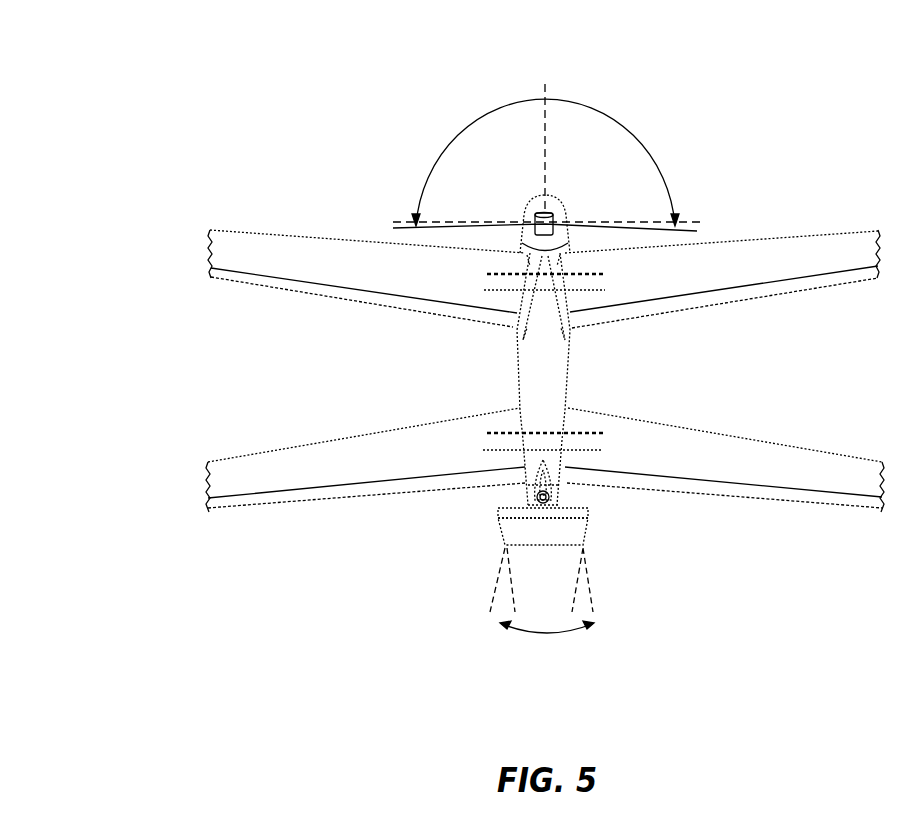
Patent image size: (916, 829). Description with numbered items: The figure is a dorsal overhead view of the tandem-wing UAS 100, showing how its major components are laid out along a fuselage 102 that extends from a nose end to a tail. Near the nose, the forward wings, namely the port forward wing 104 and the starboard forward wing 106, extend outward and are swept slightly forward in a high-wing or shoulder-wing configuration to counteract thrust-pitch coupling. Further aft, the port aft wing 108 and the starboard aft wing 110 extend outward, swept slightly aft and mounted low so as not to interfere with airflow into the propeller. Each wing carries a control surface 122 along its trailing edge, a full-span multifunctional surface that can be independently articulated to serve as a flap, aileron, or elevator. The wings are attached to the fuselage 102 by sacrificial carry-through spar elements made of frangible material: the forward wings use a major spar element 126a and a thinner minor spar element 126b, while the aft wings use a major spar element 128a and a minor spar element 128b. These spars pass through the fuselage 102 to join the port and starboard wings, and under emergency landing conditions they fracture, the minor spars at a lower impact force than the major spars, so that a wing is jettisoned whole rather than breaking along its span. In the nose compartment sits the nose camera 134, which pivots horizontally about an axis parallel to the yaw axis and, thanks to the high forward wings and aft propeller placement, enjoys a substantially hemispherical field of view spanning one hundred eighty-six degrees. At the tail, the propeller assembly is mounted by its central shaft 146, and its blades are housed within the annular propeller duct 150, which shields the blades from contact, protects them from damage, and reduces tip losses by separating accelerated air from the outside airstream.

The tandem-wing UAS 100 is at (73, 76).
The fuselage 102 is at (548, 355).
The port forward wing 104 is at (307, 253).
The starboard forward wing 106 is at (843, 253).
The port aft wing 108 is at (307, 463).
The starboard aft wing 110 is at (863, 470).
The control surface 122 is at (372, 300).
The major spar element 126a is at (566, 274).
The minor spar element 126b is at (523, 290).
The major spar element 128a is at (567, 432).
The minor spar element 128b is at (522, 449).
The nose camera 134 is at (533, 223).
The central shaft 146 is at (555, 488).
The propeller duct 150 is at (510, 528).